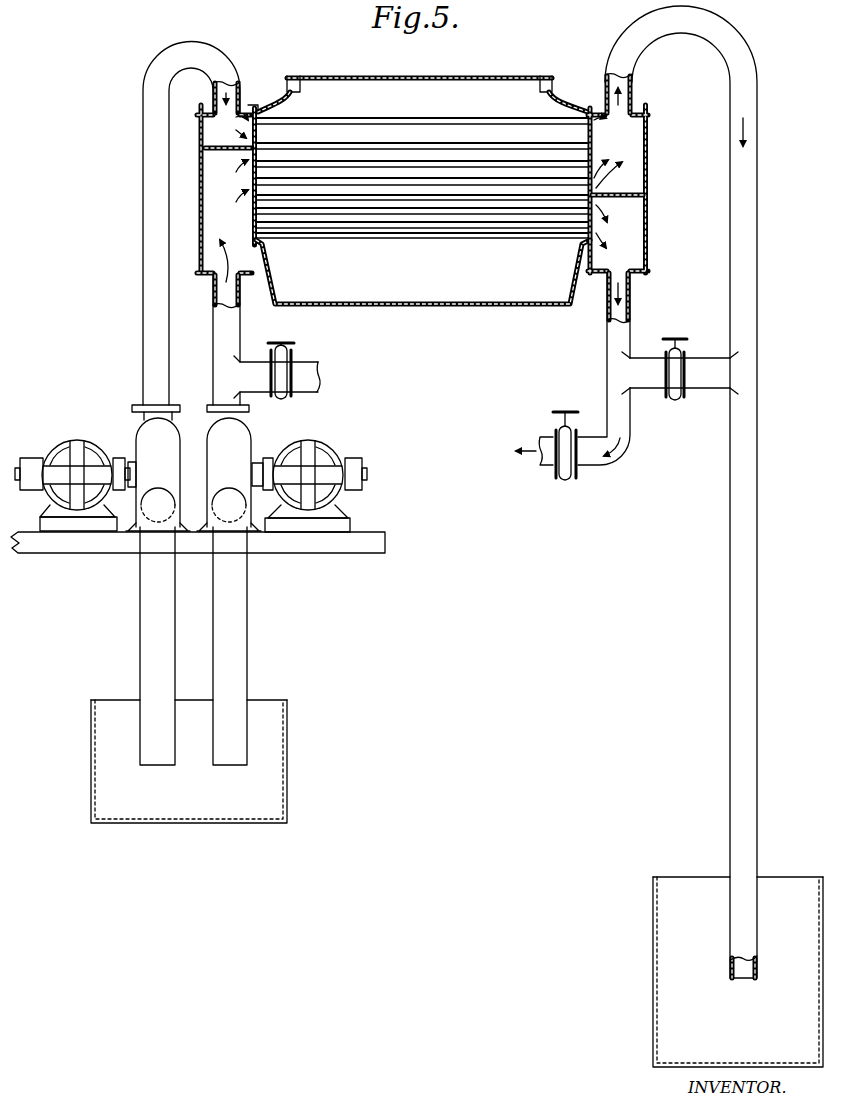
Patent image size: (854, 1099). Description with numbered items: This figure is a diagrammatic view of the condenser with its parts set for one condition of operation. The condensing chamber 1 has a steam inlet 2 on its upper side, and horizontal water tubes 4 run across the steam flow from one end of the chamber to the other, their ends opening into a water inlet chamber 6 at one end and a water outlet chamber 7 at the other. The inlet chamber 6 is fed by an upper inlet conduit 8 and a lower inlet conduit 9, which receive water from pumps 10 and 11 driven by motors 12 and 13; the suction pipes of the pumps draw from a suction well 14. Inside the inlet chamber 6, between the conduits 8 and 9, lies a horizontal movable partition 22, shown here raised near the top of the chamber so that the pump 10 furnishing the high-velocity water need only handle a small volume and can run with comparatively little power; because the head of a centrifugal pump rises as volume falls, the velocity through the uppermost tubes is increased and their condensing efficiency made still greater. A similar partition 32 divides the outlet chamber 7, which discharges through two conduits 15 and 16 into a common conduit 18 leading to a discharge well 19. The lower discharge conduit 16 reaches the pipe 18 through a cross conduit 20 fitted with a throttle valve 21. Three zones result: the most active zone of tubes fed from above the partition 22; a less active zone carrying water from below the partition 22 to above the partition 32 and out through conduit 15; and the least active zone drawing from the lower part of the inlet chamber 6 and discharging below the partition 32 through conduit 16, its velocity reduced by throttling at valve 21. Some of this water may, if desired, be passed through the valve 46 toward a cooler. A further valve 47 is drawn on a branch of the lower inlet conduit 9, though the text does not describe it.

The condensing chamber 1 is at (545, 108).
The steam inlet 2 is at (469, 86).
The water tubes 4 is at (388, 160).
The water inlet chamber 6 is at (216, 193).
The water outlet chamber 7 is at (635, 189).
The upper inlet conduit 8 is at (225, 75).
The lower inlet conduit 9 is at (229, 296).
The pump 10 is at (140, 439).
The pump 11 is at (244, 443).
The motor 12 is at (68, 442).
The motor 13 is at (324, 446).
The suction well 14 is at (268, 731).
The discharge conduit 15 is at (634, 90).
The discharge conduit 16 is at (625, 329).
The common conduit 18 is at (726, 555).
The discharge well 19 is at (672, 940).
The cross conduit 20 is at (705, 377).
The throttle valve 21 is at (676, 385).
The partition 22 is at (219, 151).
The partition 32 is at (646, 193).
The valve 46 is at (566, 462).
The valve 47 is at (288, 375).